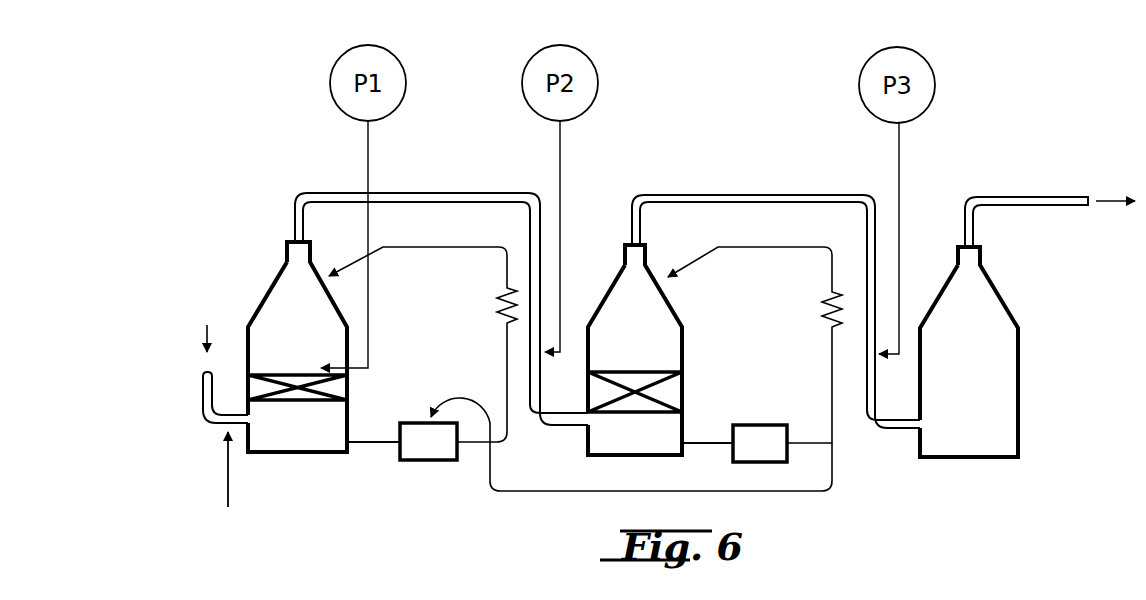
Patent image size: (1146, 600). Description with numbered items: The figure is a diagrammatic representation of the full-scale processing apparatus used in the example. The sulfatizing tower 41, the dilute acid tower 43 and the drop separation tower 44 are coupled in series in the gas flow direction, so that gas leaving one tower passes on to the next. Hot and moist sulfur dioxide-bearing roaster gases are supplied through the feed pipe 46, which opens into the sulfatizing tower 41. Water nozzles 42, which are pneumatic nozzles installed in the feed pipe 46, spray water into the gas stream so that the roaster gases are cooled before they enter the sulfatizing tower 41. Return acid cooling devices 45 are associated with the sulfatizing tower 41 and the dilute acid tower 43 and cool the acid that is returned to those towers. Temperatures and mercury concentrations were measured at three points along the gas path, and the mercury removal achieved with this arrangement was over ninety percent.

The sulfatizing tower 41 is at (266, 301).
The water nozzles 42 is at (228, 478).
The dilute acid tower 43 is at (673, 308).
The drop separation tower 44 is at (1010, 310).
The return acid cooling devices 45 is at (428, 460).
The feed pipe 46 is at (204, 388).